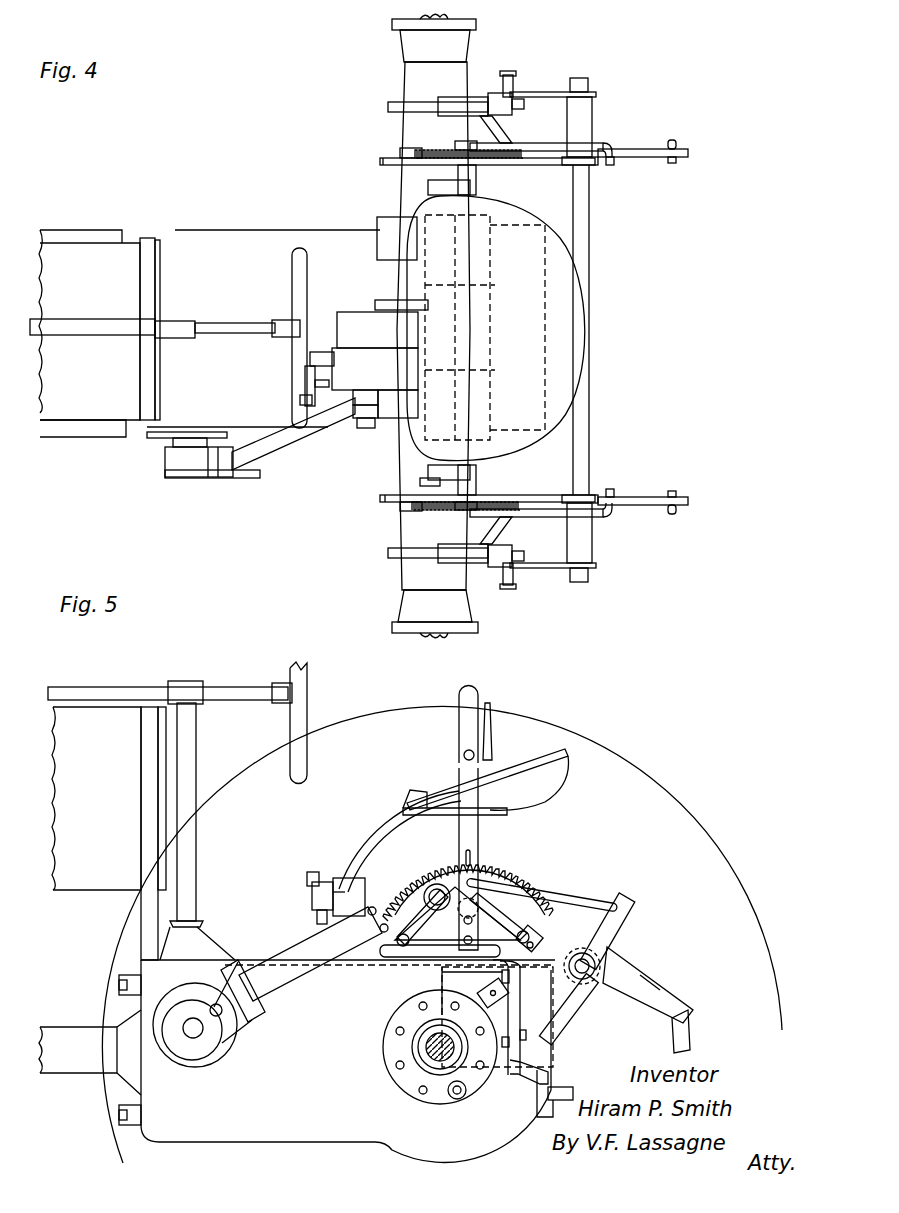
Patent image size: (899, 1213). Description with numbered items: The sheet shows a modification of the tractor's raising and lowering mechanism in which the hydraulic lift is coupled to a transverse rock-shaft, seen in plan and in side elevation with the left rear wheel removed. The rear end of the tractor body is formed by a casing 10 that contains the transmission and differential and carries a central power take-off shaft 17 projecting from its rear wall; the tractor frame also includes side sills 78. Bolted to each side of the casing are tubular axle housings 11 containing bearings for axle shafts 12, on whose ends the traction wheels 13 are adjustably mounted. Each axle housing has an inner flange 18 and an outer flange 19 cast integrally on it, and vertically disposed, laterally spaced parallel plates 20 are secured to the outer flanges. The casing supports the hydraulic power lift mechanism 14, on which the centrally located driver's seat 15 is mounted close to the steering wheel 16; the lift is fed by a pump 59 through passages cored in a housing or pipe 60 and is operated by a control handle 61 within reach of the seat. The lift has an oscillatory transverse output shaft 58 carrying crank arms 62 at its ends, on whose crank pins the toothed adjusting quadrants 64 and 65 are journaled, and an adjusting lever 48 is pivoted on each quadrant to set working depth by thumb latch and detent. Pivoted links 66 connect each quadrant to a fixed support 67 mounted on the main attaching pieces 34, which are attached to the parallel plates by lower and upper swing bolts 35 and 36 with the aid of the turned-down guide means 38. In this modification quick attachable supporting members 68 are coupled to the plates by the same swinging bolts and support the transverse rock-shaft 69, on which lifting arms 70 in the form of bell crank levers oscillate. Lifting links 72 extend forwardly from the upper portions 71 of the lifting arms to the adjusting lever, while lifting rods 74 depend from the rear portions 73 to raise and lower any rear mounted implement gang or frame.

In FIG. 4, the casing 10 is at (216, 230).
In FIG. 5, the casing 10 is at (205, 1140).
In FIG. 4, the tubular axle housing 11 is at (418, 55).
In FIG. 5, the tubular axle housing 11 is at (418, 1032).
In FIG. 4, the axle shaft 12 is at (430, 22).
In FIG. 5, the axle shaft 12 is at (430, 1048).
In FIG. 5, the traction wheel 13 is at (592, 745).
In FIG. 4, the power lift mechanism 14 is at (385, 328).
In FIG. 5, the power lift mechanism 14 is at (412, 858).
In FIG. 4, the driver's seat 15 is at (518, 220).
In FIG. 5, the driver's seat 15 is at (540, 768).
In FIG. 4, the steering wheel 16 is at (292, 275).
In FIG. 5, the steering wheel 16 is at (307, 690).
In FIG. 5, the power take-off shaft 17 is at (562, 1090).
In FIG. 4, the inner flange 18 is at (392, 168).
In FIG. 4, the outer flange 19 is at (388, 106).
In FIG. 5, the outer flange 19 is at (400, 1077).
In FIG. 4, the parallel plate 20 is at (447, 98).
In FIG. 5, the parallel plate 20 is at (452, 1099).
In FIG. 4, the main attaching piece 34 is at (493, 93).
In FIG. 5, the main attaching piece 34 is at (556, 1028).
In FIG. 5, the lower swing bolt 35 is at (516, 1086).
In FIG. 4, the upper swing bolt 36 is at (524, 104).
In FIG. 4, the guide means 38 is at (510, 74).
In FIG. 4, the adjusting lever 48 is at (460, 148).
In FIG. 5, the adjusting lever 48 is at (465, 698).
In FIG. 4, the oscillatory transverse output shaft 58 is at (445, 194).
In FIG. 5, the oscillatory transverse output shaft 58 is at (392, 958).
In FIG. 4, the pump 59 is at (255, 478).
In FIG. 5, the pump 59 is at (252, 1018).
In FIG. 4, the housing or pipe 60 is at (320, 442).
In FIG. 5, the housing or pipe 60 is at (296, 972).
In FIG. 4, the control handle 61 is at (302, 383).
In FIG. 5, the control handle 61 is at (310, 908).
In FIG. 4, the crank arm 62 is at (476, 192).
In FIG. 5, the crank arm 62 is at (490, 888).
In FIG. 4, the adjusting quadrant 64 is at (385, 160).
In FIG. 4, the adjusting quadrant 65 is at (430, 486).
In FIG. 5, the adjusting quadrant 65 is at (480, 885).
In FIG. 4, the pivoted link 66 is at (420, 151).
In FIG. 4, the fixed support 67 is at (572, 132).
In FIG. 5, the fixed support 67 is at (525, 930).
In FIG. 4, the quick attachable supporting member 68 is at (565, 92).
In FIG. 5, the quick attachable supporting member 68 is at (566, 1003).
In FIG. 4, the transverse rock-shaft 69 is at (581, 214).
In FIG. 5, the transverse rock-shaft 69 is at (598, 955).
In FIG. 4, the lifting arm 70 is at (640, 158).
In FIG. 5, the lifting arm 70 is at (606, 962).
In FIG. 4, the upper portion of lifting arm 71 is at (610, 165).
In FIG. 5, the upper portion of lifting arm 71 is at (620, 895).
In FIG. 4, the lifting link 72 is at (613, 144).
In FIG. 5, the lifting link 72 is at (548, 893).
In FIG. 4, the rear portion of lifting arm 73 is at (684, 158).
In FIG. 5, the rear portion of lifting arm 73 is at (660, 998).
In FIG. 4, the lifting rod 74 is at (676, 142).
In FIG. 5, the lifting rod 74 is at (686, 1016).
In FIG. 4, the side sill 78 is at (70, 232).
In FIG. 5, the side sill 78 is at (68, 1035).